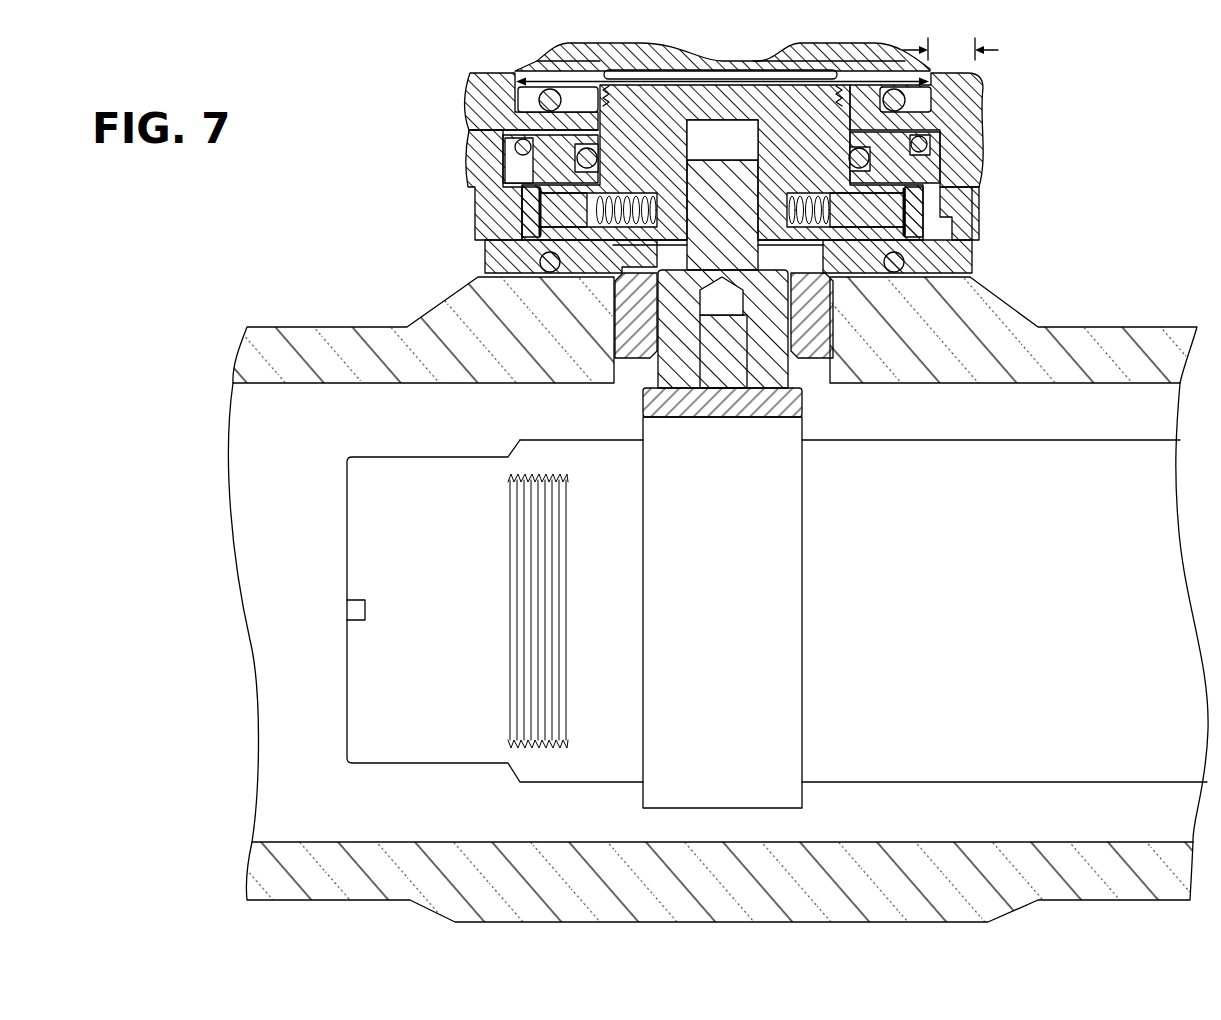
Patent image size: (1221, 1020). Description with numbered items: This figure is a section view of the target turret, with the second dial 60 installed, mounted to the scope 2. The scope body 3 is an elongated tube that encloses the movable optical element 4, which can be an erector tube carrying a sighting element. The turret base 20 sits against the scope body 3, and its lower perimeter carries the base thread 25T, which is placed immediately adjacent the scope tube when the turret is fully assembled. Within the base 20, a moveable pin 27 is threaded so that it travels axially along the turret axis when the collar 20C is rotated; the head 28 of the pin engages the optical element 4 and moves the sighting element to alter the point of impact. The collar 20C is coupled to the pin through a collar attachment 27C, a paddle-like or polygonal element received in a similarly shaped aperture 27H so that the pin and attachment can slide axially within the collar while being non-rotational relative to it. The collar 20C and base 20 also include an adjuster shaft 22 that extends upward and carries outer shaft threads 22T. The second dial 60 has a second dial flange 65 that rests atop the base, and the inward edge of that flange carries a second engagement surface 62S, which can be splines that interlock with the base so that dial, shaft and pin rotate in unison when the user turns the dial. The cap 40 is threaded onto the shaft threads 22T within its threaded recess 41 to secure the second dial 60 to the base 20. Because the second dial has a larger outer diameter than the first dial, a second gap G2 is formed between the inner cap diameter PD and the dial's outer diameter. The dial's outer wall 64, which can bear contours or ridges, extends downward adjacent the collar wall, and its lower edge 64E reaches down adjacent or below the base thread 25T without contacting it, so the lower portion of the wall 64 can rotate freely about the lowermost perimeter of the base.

The scope 2 is at (718, 586).
The scope body 3 is at (362, 327).
The movable optical element 4 is at (1073, 465).
The base 20 is at (980, 249).
The collar 20C is at (510, 172).
The adjuster shaft 22 is at (730, 128).
The outer shaft threads 22T is at (843, 105).
The base thread 25T is at (545, 268).
The moveable pin 27 is at (697, 197).
The collar attachment 27C is at (710, 158).
The aperture 27H is at (733, 140).
The head 28 is at (766, 420).
The cap 40 is at (892, 44).
The threaded recess 41 is at (610, 70).
The second dial 60 is at (995, 105).
The second engagement surface 62S is at (850, 118).
The outer wall 64 is at (472, 198).
The lower edge 64E is at (492, 262).
The second dial flange 65 is at (578, 120).
The inner cap diameter PD is at (548, 81).
The second gap G2 is at (984, 47).